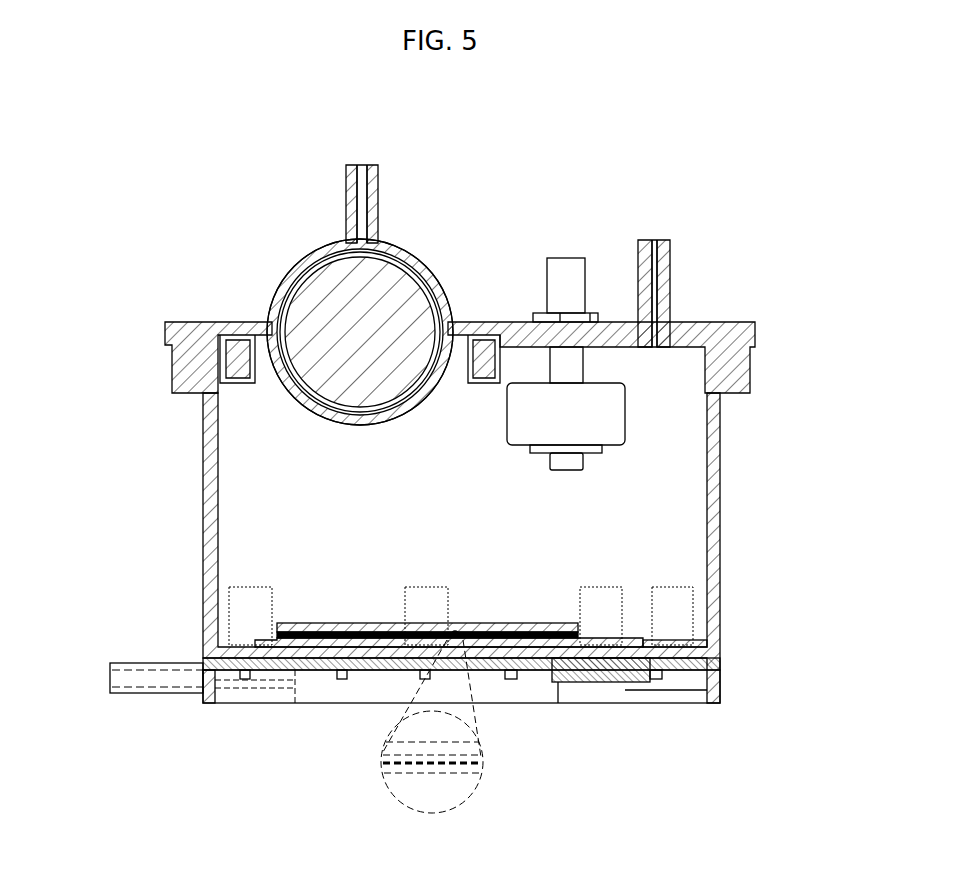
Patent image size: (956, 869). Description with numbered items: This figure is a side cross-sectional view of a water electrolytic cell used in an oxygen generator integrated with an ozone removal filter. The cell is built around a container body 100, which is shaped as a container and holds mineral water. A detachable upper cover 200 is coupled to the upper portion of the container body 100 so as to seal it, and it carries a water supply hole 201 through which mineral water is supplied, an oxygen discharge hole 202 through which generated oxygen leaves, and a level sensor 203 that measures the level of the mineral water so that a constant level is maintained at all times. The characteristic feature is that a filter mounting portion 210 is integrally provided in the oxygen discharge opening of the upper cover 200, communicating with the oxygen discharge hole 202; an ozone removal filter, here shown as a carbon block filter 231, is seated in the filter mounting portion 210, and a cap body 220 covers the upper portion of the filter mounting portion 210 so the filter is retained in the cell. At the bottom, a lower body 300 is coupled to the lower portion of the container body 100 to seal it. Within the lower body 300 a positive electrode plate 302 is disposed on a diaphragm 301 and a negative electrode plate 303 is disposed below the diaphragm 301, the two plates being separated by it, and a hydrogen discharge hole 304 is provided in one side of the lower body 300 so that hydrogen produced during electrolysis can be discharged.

The container body 100 is at (712, 525).
The detachable upper cover 200 is at (730, 323).
The water supply hole 201 is at (660, 242).
The oxygen discharge hole 202 is at (377, 168).
The level sensor 203 is at (572, 265).
The filter mounting portion 210 is at (452, 306).
The cap body 220 is at (298, 268).
The carbon block filter 231 is at (308, 310).
The lower body 300 is at (720, 678).
The diaphragm 301 is at (385, 757).
The positive electrode plate 302 is at (385, 742).
The negative electrode plate 303 is at (385, 775).
The hydrogen discharge hole 304 is at (137, 663).